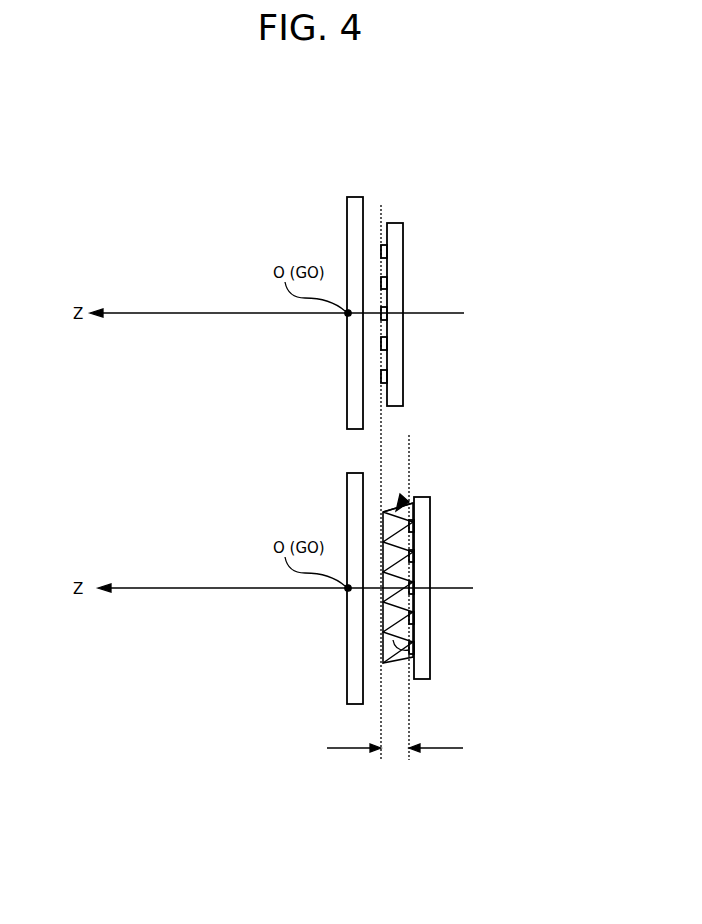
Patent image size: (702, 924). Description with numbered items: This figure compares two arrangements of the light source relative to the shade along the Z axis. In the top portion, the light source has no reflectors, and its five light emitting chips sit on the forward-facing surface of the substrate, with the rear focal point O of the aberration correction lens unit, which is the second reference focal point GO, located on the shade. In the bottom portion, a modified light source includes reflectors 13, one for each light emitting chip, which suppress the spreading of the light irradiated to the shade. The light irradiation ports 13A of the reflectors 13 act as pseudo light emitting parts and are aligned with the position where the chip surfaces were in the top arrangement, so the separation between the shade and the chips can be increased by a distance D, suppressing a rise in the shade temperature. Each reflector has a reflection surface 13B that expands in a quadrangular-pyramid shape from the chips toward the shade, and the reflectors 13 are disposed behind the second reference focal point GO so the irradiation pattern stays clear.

The reflector 13 is at (414, 493).
The light irradiation port 13A is at (387, 512).
The reflection surface 13B is at (405, 650).
The distance D is at (395, 762).